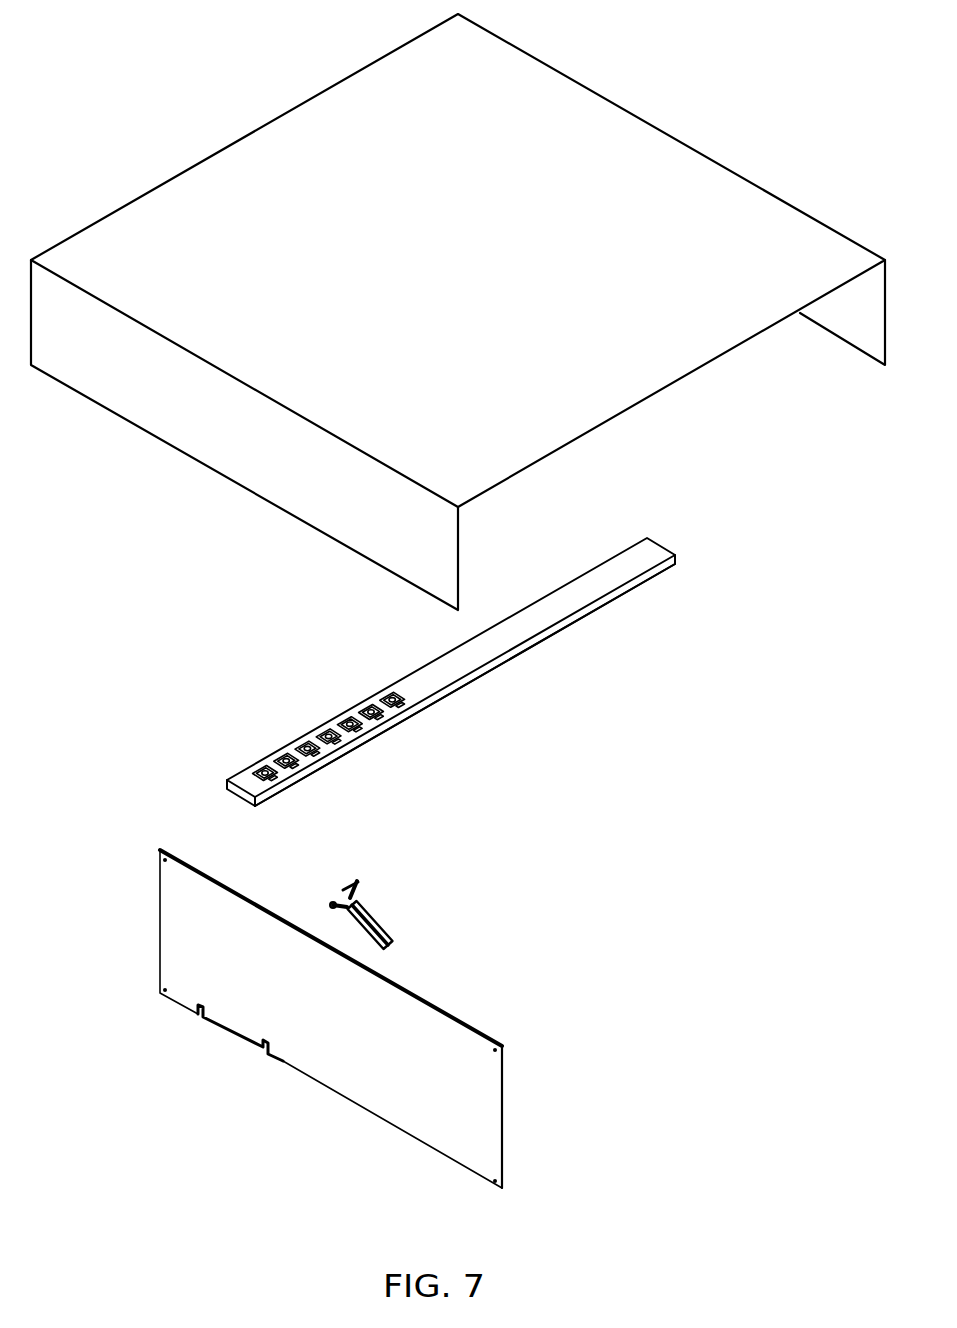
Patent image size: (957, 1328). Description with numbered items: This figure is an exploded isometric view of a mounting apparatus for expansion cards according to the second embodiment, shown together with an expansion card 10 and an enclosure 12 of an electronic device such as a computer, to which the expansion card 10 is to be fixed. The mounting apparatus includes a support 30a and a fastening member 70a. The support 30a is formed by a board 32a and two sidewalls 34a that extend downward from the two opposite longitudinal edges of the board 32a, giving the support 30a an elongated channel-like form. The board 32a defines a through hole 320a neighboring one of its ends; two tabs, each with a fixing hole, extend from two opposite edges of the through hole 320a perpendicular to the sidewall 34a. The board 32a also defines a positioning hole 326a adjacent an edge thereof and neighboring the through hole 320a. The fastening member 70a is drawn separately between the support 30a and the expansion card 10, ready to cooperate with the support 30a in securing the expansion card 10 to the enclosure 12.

The enclosure 12 is at (670, 177).
The expansion card 10 is at (430, 1025).
The support 30a is at (409, 695).
The board 32a is at (490, 652).
The sidewalls 34a is at (465, 682).
The through hole 320a is at (258, 765).
The positioning hole 326a is at (285, 780).
The fastening member 70a is at (382, 923).